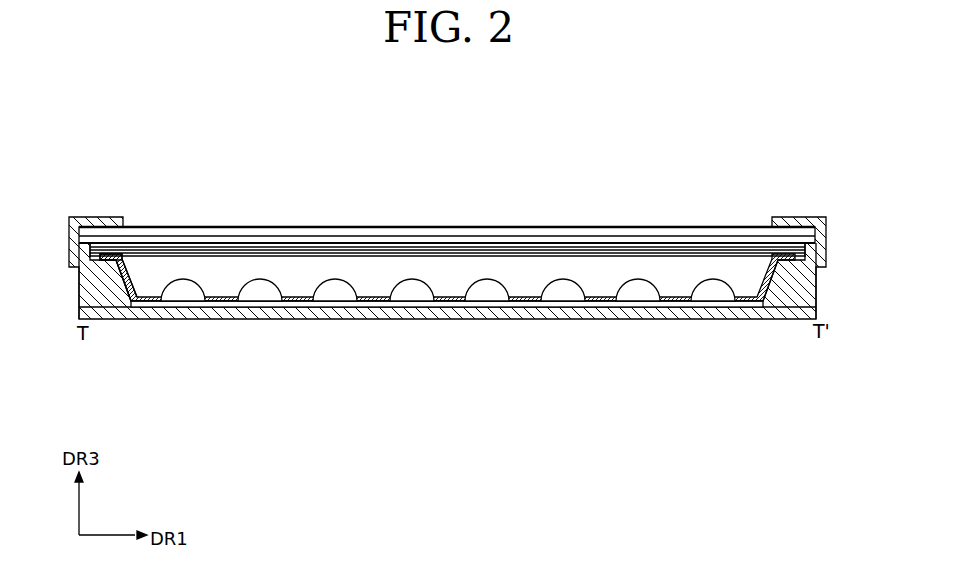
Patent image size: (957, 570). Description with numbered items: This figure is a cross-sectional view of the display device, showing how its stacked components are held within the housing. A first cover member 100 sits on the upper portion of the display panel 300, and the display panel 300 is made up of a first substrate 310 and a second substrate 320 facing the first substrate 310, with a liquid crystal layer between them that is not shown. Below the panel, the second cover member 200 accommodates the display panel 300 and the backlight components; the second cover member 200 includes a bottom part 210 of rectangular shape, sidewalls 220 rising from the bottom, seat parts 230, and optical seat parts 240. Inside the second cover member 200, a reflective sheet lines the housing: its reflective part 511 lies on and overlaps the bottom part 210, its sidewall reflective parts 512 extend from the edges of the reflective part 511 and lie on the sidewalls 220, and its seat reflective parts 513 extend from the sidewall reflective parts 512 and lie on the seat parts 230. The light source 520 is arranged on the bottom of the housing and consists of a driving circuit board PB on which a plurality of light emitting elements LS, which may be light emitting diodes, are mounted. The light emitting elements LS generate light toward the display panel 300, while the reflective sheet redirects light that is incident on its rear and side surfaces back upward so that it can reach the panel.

The first cover member 100 is at (825, 238).
The second cover member 200 is at (540, 320).
The bottom part 210 is at (482, 312).
The sidewalls 220 is at (122, 282).
The seat parts 230 is at (117, 293).
The optical seat parts 240 is at (78, 262).
The display panel 300 is at (495, 153).
The first substrate 310 is at (472, 241).
The second substrate 320 is at (346, 230).
The reflective part 511 is at (220, 302).
The sidewall reflective parts 512 is at (145, 302).
The seat reflective parts 513 is at (110, 256).
The light source 520 is at (423, 388).
The driving circuit board PB is at (332, 305).
The light emitting elements LS is at (410, 299).